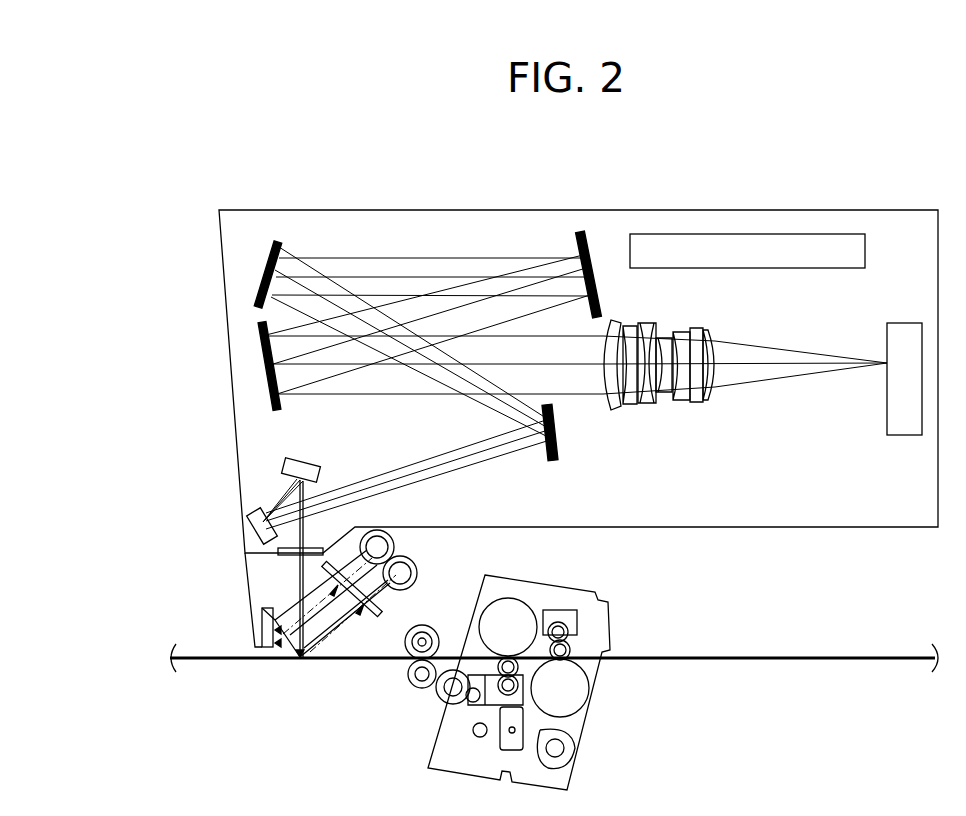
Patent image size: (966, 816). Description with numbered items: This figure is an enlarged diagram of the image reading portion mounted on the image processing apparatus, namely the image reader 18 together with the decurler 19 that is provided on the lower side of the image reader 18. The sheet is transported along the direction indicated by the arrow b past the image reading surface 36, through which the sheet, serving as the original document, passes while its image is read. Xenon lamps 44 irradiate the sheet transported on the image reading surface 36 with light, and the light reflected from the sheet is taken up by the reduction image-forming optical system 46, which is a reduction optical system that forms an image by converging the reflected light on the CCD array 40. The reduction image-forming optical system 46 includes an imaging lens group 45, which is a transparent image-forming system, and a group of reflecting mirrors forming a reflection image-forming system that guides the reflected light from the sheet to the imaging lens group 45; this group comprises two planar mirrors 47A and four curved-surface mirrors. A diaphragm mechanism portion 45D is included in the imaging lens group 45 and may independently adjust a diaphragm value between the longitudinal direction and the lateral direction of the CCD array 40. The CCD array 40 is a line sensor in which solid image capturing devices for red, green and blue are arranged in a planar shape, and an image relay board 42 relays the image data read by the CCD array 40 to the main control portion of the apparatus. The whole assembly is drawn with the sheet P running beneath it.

The image reader 18 is at (596, 210).
The planar mirror 47A is at (304, 460).
The imaging lens group 45 is at (659, 358).
The diaphragm mechanism portion 45D is at (660, 394).
The image relay board 42 is at (754, 268).
The CCD array 40 is at (904, 436).
The reduction image-forming optical system 46 is at (720, 426).
The xenon lamps 44 is at (395, 560).
The image reading surface 36 is at (241, 658).
The decurler 19 is at (588, 590).
The sheet P is at (655, 656).
The arrow b is at (748, 668).